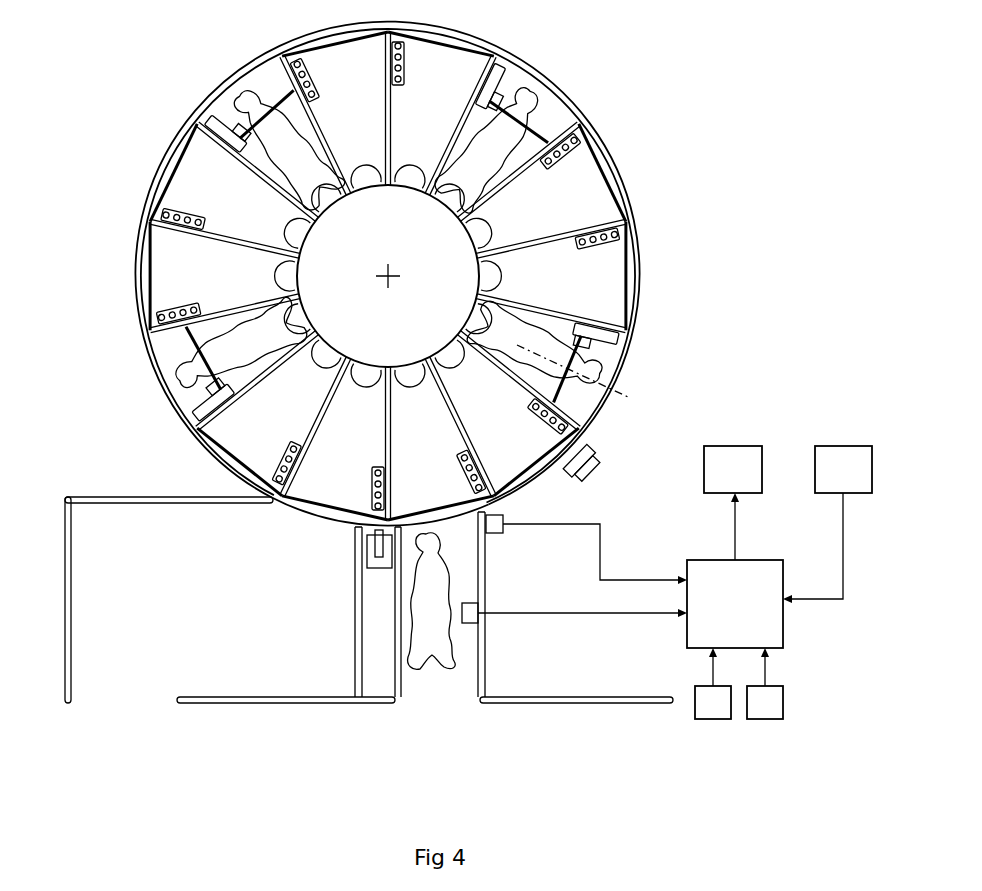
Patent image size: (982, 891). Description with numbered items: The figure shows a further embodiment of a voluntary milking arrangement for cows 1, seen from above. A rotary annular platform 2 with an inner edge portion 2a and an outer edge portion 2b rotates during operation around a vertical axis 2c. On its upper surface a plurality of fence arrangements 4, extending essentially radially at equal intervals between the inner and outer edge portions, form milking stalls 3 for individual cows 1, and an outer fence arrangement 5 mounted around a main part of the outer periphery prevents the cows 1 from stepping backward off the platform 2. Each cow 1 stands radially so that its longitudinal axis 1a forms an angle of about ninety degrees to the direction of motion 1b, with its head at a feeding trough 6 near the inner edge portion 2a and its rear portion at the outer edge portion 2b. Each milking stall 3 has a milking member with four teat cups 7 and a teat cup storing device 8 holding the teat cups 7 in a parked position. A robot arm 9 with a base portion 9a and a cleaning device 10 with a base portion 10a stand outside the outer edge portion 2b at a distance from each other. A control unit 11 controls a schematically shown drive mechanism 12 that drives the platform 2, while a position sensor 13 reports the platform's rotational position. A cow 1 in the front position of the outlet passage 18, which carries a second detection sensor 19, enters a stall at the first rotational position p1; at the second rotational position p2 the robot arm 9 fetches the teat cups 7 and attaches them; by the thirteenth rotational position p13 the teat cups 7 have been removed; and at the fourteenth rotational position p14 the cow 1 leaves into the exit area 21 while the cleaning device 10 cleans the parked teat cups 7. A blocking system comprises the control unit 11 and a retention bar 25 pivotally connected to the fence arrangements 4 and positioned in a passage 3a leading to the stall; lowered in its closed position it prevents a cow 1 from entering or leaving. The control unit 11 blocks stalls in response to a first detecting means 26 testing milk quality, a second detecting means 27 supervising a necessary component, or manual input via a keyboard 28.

The cow 1 is at (250, 93).
The longitudinal axis of the cow 1a is at (612, 375).
The direction of motion of the cows 1b is at (617, 342).
The rotary annular platform 2 is at (553, 117).
The inner edge portion 2a is at (443, 352).
The outer edge portion 2b is at (642, 276).
The vertical axis 2c is at (383, 271).
The milking stall 3 is at (222, 165).
The passage 3a is at (428, 518).
The fence arrangement 4 is at (203, 227).
The outer fence arrangement 5 is at (600, 148).
The feeding trough 6 is at (478, 248).
The teat cup 7 is at (372, 490).
The teat cup storing device 8 is at (205, 398).
The robot arm 9 is at (600, 463).
The base portion of the robot arm 9a is at (606, 471).
The cleaning device 10 is at (374, 547).
The base portion of the cleaning device 10a is at (372, 566).
The control unit 11 is at (740, 588).
The drive mechanism 12 is at (732, 458).
The position sensor 13 is at (506, 528).
The outlet passage 18 is at (460, 637).
The second detection sensor 19 is at (476, 610).
The exit area 21 is at (220, 611).
The retention bar 25 is at (438, 506).
The first detecting means 26 is at (843, 465).
The second detecting means 27 is at (713, 705).
The keyboard 28 is at (762, 708).
The first rotational position p1 is at (462, 496).
The second rotational position p2 is at (523, 450).
The thirteenth rotational position p13 is at (225, 440).
The fourteenth rotational position p14 is at (345, 518).